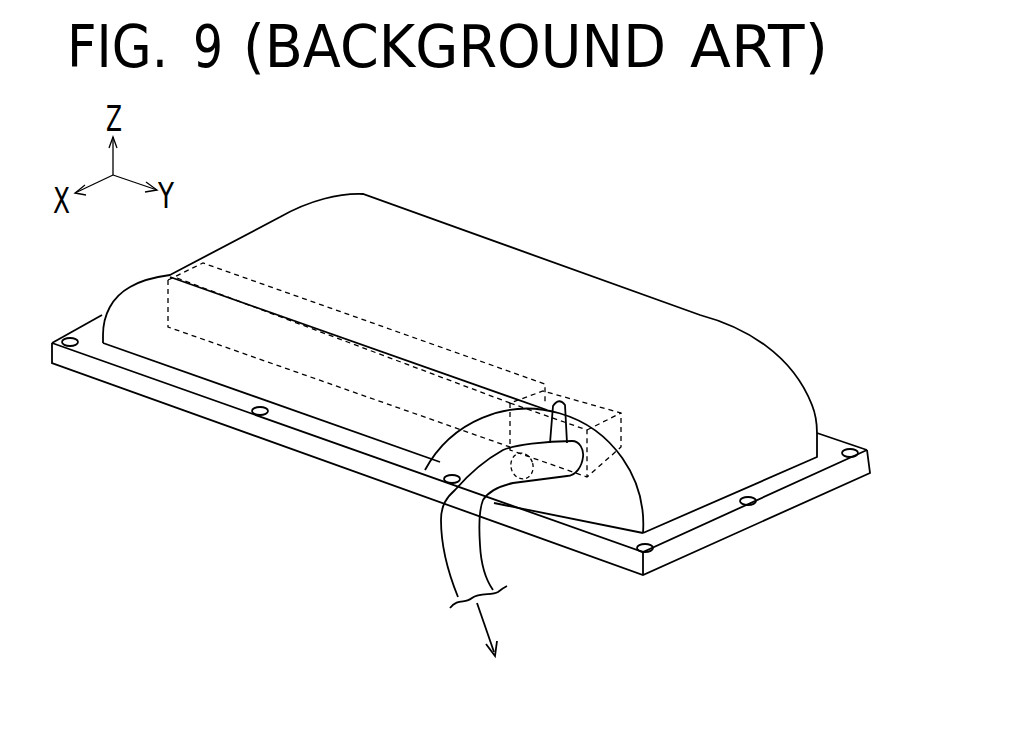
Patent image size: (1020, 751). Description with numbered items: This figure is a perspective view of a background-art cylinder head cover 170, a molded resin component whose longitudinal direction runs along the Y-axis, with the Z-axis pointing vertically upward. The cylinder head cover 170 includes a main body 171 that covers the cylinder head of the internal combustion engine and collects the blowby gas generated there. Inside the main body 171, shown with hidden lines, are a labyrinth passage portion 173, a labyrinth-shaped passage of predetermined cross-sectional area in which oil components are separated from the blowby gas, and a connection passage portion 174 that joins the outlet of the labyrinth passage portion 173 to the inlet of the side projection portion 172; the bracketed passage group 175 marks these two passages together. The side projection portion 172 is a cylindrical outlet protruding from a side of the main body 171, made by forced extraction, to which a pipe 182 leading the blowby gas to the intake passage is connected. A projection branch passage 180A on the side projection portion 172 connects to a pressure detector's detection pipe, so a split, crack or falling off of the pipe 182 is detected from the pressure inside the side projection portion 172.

The cylinder head cover 170 is at (787, 278).
The main body 171 is at (678, 350).
The side projection portion 172 is at (571, 458).
The labyrinth passage portion 173 is at (470, 357).
The connection passage portion 174 is at (546, 392).
The pump assembly 175 is at (648, 191).
The projection branch passage 180A is at (425, 470).
The pipe 182 is at (450, 575).